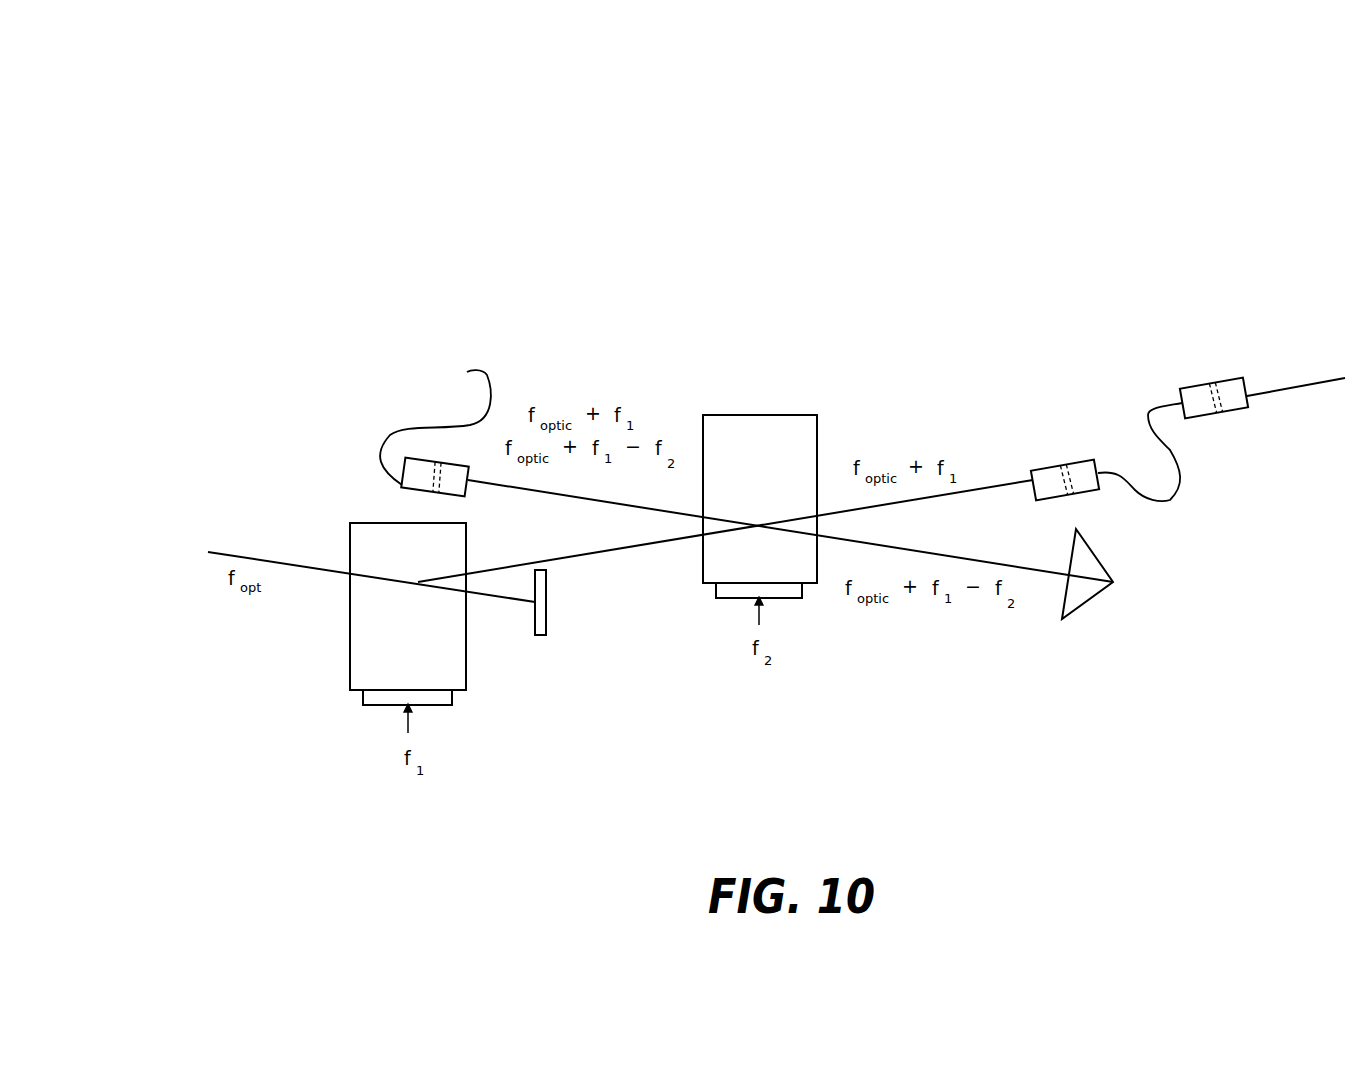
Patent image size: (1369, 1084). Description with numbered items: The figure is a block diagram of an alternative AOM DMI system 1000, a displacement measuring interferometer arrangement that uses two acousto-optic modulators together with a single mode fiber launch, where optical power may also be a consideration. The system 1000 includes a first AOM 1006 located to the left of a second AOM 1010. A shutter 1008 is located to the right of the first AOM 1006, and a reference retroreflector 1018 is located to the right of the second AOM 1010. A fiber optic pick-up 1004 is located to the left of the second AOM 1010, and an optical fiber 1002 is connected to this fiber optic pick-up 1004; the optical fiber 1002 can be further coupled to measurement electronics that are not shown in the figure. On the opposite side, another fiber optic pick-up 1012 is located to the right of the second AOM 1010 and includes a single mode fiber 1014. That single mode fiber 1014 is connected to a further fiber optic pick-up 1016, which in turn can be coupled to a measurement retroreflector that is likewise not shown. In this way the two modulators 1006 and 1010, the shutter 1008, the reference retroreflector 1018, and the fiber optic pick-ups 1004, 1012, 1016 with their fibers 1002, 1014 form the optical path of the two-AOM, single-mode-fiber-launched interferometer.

The AOM DMI system 1000 is at (135, 176).
The optical fiber 1002 is at (393, 428).
The fiber optic pick-up 1004 is at (402, 483).
The first AOM 1006 is at (441, 680).
The shutter 1008 is at (540, 636).
The second AOM 1010 is at (794, 571).
The fiber optic pick-up 1012 is at (1065, 462).
The single mode fiber 1014 is at (1170, 500).
The fiber optic pick-up 1016 is at (1230, 385).
The reference retroreflector 1018 is at (1092, 598).